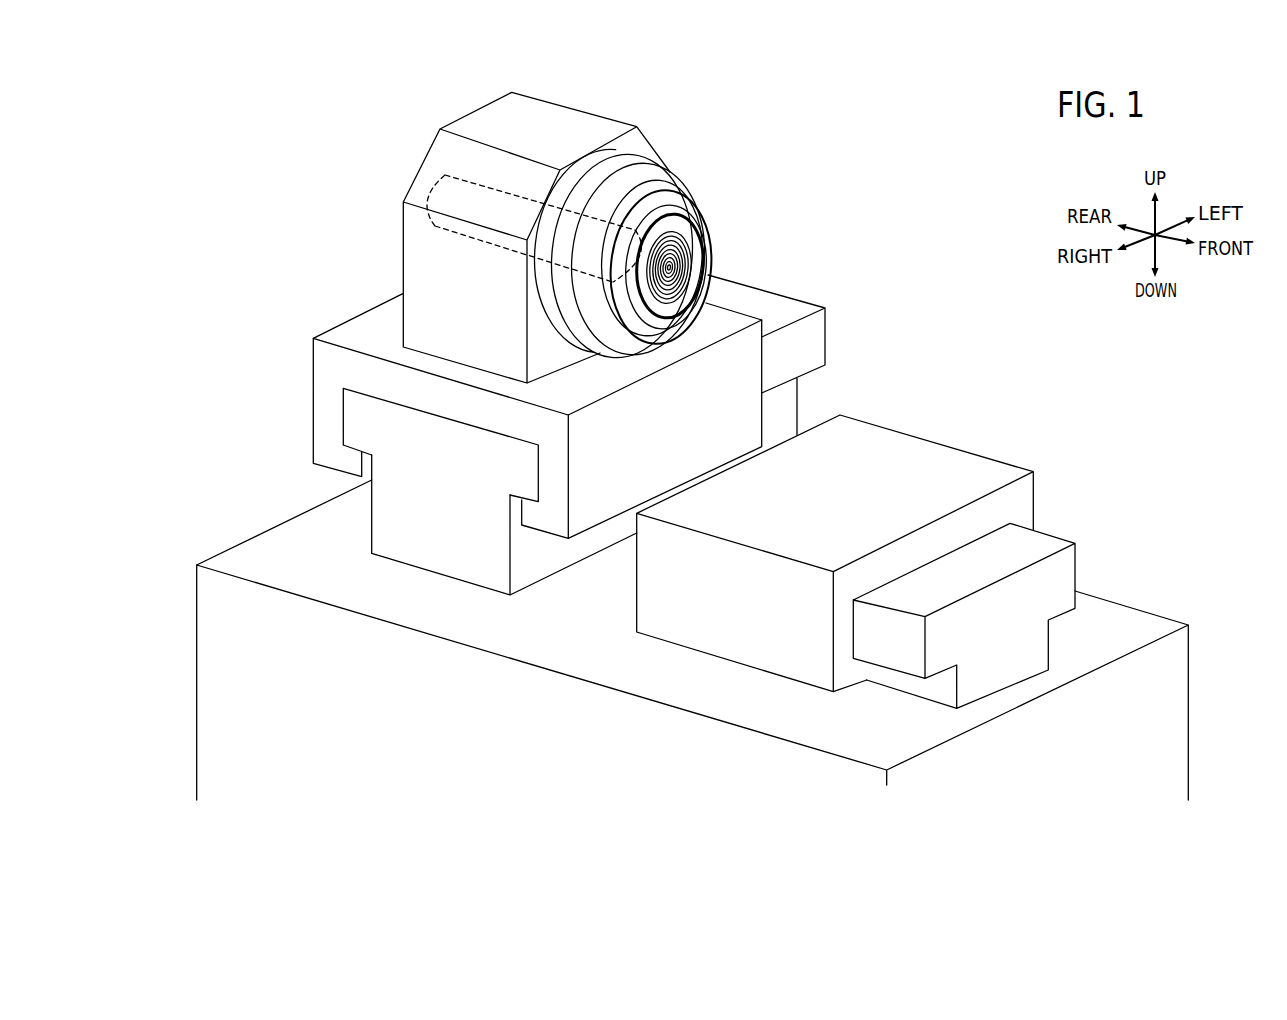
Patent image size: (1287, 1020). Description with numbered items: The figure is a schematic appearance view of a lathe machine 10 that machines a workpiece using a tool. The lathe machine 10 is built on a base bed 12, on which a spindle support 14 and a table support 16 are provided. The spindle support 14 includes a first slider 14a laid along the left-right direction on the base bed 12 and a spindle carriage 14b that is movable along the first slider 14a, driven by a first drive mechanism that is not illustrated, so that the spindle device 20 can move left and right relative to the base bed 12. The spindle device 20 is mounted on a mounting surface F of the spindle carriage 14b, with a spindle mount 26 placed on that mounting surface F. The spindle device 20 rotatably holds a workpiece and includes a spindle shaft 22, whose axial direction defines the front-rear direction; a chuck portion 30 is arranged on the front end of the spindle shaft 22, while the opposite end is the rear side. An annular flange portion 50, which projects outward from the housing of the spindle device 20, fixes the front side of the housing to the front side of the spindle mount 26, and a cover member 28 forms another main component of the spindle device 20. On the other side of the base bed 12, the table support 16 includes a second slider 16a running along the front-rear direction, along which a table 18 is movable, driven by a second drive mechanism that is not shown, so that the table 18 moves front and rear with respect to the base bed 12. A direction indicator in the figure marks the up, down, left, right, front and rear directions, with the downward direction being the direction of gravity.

The lathe machine 10 is at (273, 186).
The base bed 12 is at (197, 663).
The spindle support 14 is at (479, 481).
The first slider 14a is at (447, 538).
The spindle carriage 14b is at (509, 403).
The table support 16 is at (899, 513).
The second slider 16a is at (1065, 574).
The table 18 is at (688, 628).
The spindle device 20 is at (560, 226).
The spindle shaft 22 is at (470, 178).
The spindle mount 26 is at (422, 255).
The cover member 28 is at (632, 192).
The chuck portion 30 is at (695, 248).
The flange portion 50 is at (586, 170).
The mounting surface F is at (365, 332).